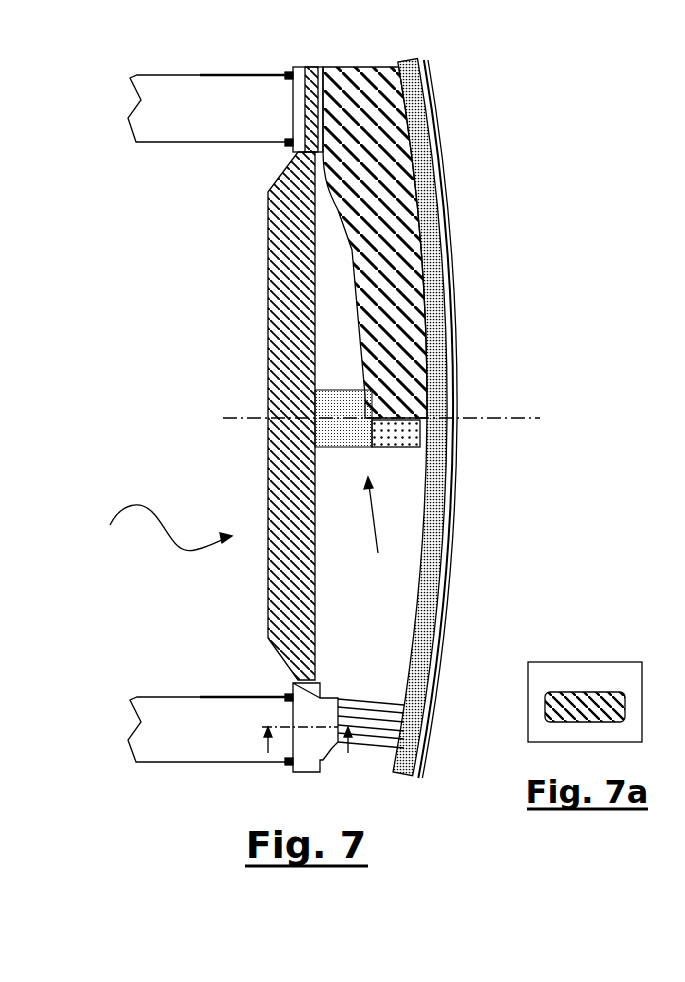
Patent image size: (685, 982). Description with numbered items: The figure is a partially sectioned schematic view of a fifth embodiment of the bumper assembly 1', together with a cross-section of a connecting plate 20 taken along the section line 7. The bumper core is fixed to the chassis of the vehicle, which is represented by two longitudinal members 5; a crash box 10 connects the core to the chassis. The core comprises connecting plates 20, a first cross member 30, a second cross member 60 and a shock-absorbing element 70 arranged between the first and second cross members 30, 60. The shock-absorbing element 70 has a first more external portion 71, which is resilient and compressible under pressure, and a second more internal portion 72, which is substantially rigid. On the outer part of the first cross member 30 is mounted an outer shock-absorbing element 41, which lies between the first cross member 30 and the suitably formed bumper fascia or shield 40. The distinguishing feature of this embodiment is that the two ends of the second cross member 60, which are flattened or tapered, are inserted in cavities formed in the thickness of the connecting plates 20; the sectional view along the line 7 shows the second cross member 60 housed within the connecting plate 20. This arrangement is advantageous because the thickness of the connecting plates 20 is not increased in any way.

In FIG. 7, the bumper assembly 1' is at (158, 528).
In FIG. 7, the longitudinal member 5 is at (207, 128).
In FIG. 7, the section line 7 is at (381, 594).
In FIG. 7, the crash box 10 is at (372, 712).
In FIG. 7, the connecting plate 20 is at (293, 63).
In FIG. 7A, the connecting plate 20 is at (562, 662).
In FIG. 7, the first cross member 30 is at (370, 88).
In FIG. 7, the bumper fascia or shield 40 is at (453, 312).
In FIG. 7, the outer shock-absorbing element 41 is at (444, 163).
In FIG. 7, the second cross member 60 is at (313, 65).
In FIG. 7A, the second cross member 60 is at (597, 690).
In FIG. 7, the shock-absorbing element 70 is at (375, 531).
In FIG. 7, the first more external portion 71 is at (410, 435).
In FIG. 7, the second more internal portion 72 is at (330, 435).